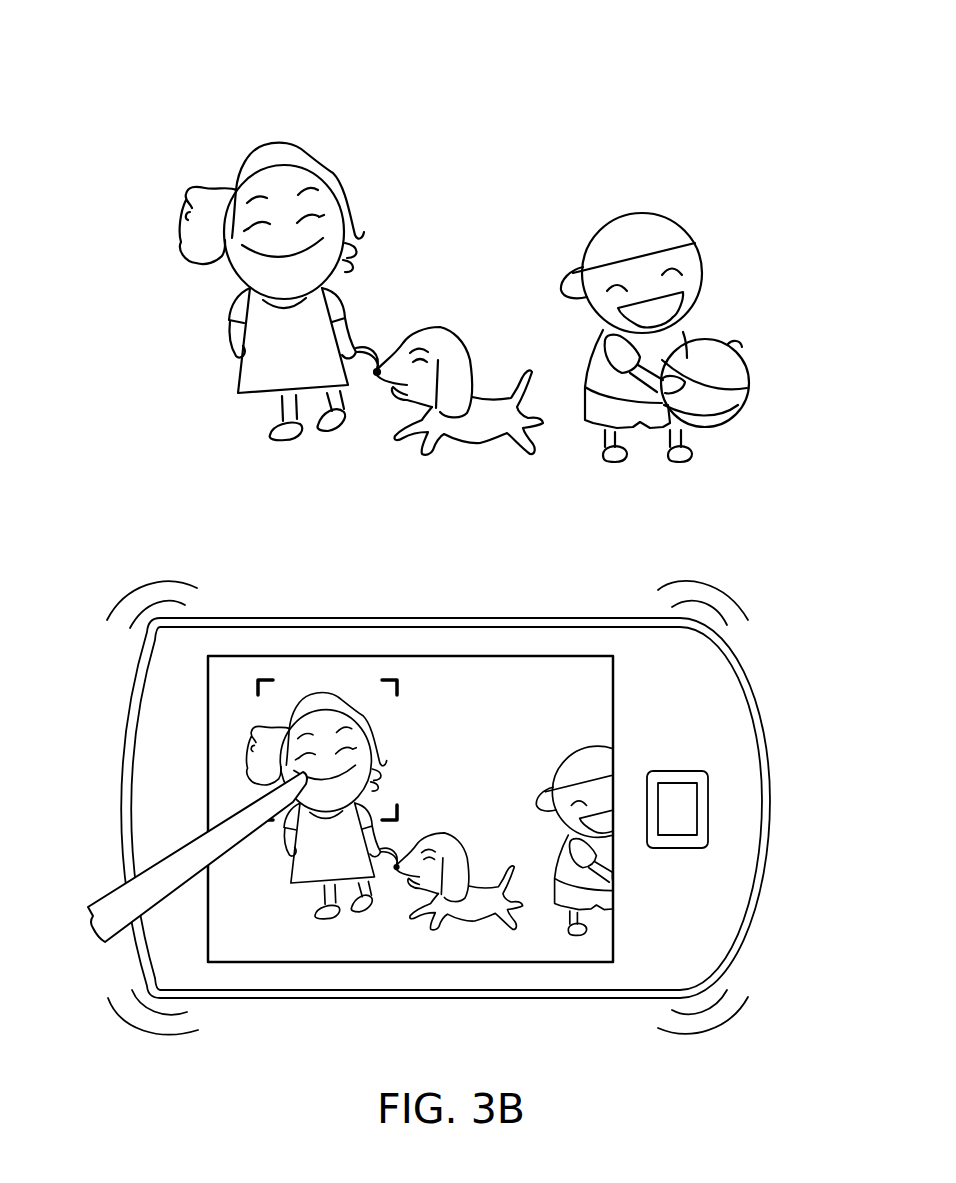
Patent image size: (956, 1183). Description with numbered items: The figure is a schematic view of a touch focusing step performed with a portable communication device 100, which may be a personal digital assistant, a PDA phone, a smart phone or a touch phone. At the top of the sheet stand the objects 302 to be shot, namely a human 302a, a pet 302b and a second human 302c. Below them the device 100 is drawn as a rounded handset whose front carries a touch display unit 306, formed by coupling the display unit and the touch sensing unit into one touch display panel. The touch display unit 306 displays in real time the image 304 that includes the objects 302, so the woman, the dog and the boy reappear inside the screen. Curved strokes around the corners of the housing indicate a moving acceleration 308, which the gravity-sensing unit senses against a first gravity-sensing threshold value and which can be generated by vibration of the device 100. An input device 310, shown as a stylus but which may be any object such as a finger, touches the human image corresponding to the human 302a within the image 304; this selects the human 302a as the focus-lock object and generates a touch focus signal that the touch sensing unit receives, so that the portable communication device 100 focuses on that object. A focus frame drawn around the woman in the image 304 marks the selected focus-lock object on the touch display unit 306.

The portable communication device 100 is at (715, 673).
The objects to be shot 302 is at (562, 44).
The human 302a is at (328, 135).
The pet 302b is at (450, 310).
The human 302c is at (603, 207).
The image 304 is at (452, 680).
The touch display unit 306 is at (540, 655).
The moving acceleration 308 is at (737, 575).
The input device 310 is at (100, 882).